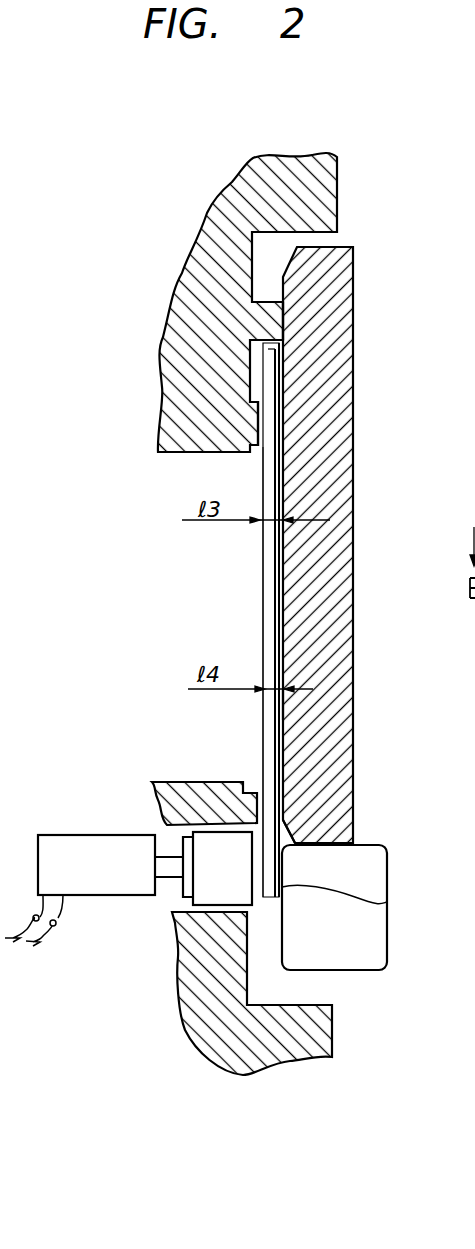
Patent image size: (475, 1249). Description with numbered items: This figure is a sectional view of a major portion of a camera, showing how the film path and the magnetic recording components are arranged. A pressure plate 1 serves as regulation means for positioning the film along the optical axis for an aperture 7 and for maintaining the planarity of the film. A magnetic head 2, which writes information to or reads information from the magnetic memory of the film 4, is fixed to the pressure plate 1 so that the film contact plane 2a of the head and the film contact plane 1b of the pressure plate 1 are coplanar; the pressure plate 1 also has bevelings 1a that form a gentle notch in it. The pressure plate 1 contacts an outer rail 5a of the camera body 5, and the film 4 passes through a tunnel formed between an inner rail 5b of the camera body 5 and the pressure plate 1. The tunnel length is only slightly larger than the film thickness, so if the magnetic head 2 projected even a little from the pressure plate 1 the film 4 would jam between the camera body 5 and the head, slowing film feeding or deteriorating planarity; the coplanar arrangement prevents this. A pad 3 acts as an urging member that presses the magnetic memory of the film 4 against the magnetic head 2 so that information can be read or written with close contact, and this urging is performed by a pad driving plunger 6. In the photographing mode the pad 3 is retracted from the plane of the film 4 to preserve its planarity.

The pressure plate 1 is at (332, 748).
The bevelings 1a is at (305, 822).
The film contact plane of the pressure plate 1b is at (285, 706).
The magnetic head 2 is at (365, 865).
The film contact plane of the magnetic head 2a is at (387, 902).
The pad 3 is at (227, 893).
The film 4 is at (270, 613).
The camera body 5 is at (192, 305).
The outer rail 5a is at (272, 317).
The inner rail 5b is at (255, 416).
The pad driving plunger 6 is at (65, 852).
The aperture 7 is at (253, 565).